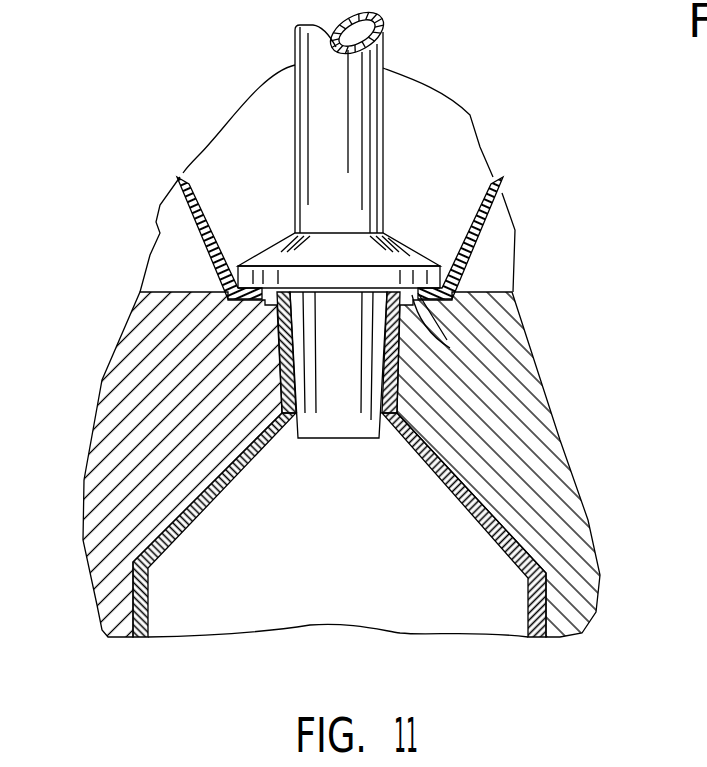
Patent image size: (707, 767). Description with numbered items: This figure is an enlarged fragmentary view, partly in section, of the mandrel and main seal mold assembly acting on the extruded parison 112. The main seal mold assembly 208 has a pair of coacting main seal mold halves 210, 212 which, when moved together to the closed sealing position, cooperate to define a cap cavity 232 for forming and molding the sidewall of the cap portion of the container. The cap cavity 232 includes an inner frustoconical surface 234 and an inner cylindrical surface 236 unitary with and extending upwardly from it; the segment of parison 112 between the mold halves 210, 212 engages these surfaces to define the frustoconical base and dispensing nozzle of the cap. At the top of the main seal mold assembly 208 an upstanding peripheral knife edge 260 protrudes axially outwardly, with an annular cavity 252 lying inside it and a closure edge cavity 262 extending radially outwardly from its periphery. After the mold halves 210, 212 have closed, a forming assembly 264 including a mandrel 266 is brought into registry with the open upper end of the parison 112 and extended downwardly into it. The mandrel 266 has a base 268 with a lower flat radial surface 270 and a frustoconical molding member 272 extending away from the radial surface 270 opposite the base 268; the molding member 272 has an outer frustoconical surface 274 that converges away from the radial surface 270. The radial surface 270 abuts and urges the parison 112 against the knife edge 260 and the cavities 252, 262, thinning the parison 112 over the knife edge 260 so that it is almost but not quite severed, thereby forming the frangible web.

The extruded parison 112 is at (182, 174).
The main seal mold assembly 208 is at (118, 440).
The main seal mold half 210 is at (567, 523).
The main seal mold half 212 is at (122, 391).
The cap cavity 232 is at (235, 593).
The inner frustoconical surface 234 is at (466, 478).
The inner cylindrical surface 236 is at (281, 350).
The annular cavity 252 is at (404, 296).
The knife edge 260 is at (432, 331).
The closure edge cavity 262 is at (462, 313).
The forming assembly 264 is at (350, 87).
The mandrel 266 is at (365, 264).
The base 268 is at (276, 243).
The radial surface 270 is at (333, 290).
The frustoconical molding member 272 is at (343, 427).
The outer frustoconical surface 274 is at (280, 397).